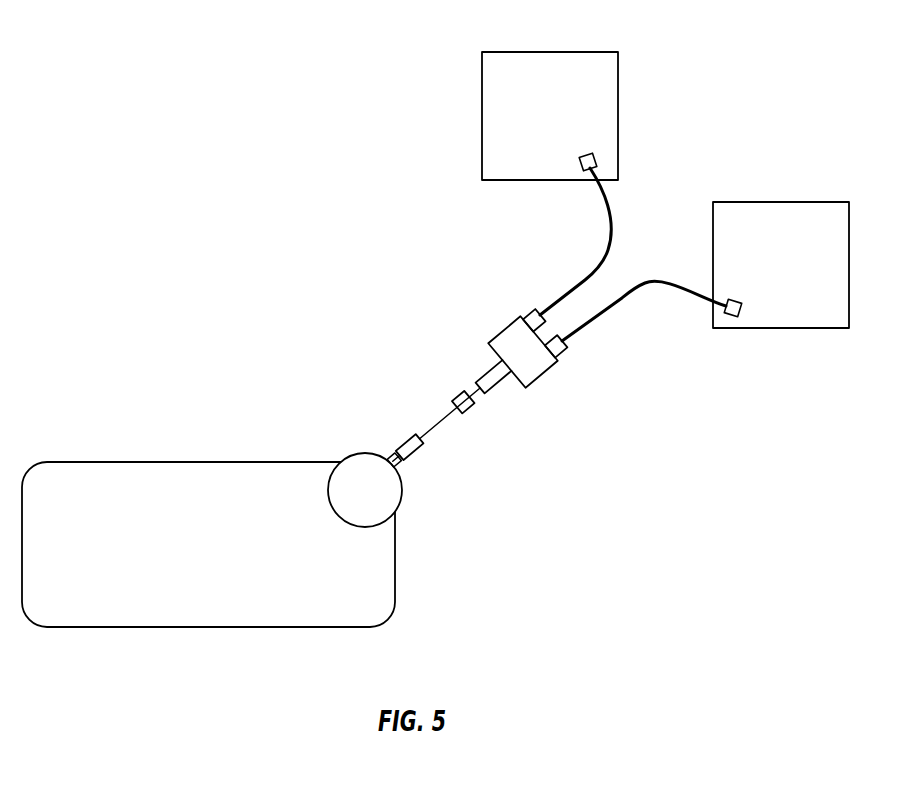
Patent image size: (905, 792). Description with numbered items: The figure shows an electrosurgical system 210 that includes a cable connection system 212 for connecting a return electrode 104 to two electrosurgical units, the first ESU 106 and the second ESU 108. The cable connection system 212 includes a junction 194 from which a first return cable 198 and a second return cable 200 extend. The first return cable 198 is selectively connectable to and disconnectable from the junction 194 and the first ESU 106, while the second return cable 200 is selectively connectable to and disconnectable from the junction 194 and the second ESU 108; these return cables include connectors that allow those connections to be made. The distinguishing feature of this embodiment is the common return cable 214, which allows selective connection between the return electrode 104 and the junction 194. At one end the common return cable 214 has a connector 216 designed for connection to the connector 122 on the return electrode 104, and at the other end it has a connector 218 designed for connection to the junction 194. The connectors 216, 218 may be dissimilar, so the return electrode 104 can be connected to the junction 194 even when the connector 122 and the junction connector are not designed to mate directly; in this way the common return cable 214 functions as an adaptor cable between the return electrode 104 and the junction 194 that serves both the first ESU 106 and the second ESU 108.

The return electrode 104 is at (233, 627).
The first ESU 106 is at (580, 52).
The second ESU 108 is at (755, 202).
The connector 122 is at (389, 459).
The junction 194 is at (540, 378).
The first return cable 198 is at (622, 203).
The second return cable 200 is at (646, 305).
The electrosurgical system 210 is at (325, 65).
The cable connection system 212 is at (590, 190).
The common return cable 214 is at (440, 432).
The connector 216 is at (417, 458).
The connector 218 is at (468, 412).